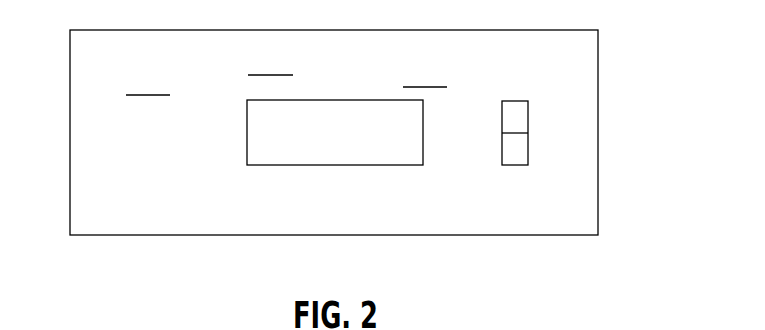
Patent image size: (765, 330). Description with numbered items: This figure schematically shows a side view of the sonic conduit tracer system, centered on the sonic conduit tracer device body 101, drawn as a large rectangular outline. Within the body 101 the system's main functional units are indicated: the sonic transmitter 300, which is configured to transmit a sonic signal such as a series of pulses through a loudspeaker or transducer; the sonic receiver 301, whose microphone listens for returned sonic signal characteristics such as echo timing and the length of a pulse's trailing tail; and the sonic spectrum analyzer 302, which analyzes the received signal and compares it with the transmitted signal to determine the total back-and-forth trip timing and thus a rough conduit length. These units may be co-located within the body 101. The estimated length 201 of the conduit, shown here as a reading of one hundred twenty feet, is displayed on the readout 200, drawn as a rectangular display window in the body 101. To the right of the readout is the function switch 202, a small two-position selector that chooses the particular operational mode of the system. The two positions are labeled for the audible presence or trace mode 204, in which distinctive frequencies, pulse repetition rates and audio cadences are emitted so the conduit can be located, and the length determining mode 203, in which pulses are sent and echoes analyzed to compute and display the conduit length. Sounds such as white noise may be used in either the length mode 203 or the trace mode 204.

The sonic conduit tracer device body 101 is at (582, 43).
The readout 200 is at (423, 146).
The estimated length 201 is at (247, 130).
The function switch 202 is at (528, 138).
The length mode 203 is at (560, 197).
The trace mode 204 is at (552, 73).
The sonic transmitter 300 is at (425, 72).
The sonic receiver 301 is at (270, 59).
The sonic spectrum analyzer 302 is at (148, 80).